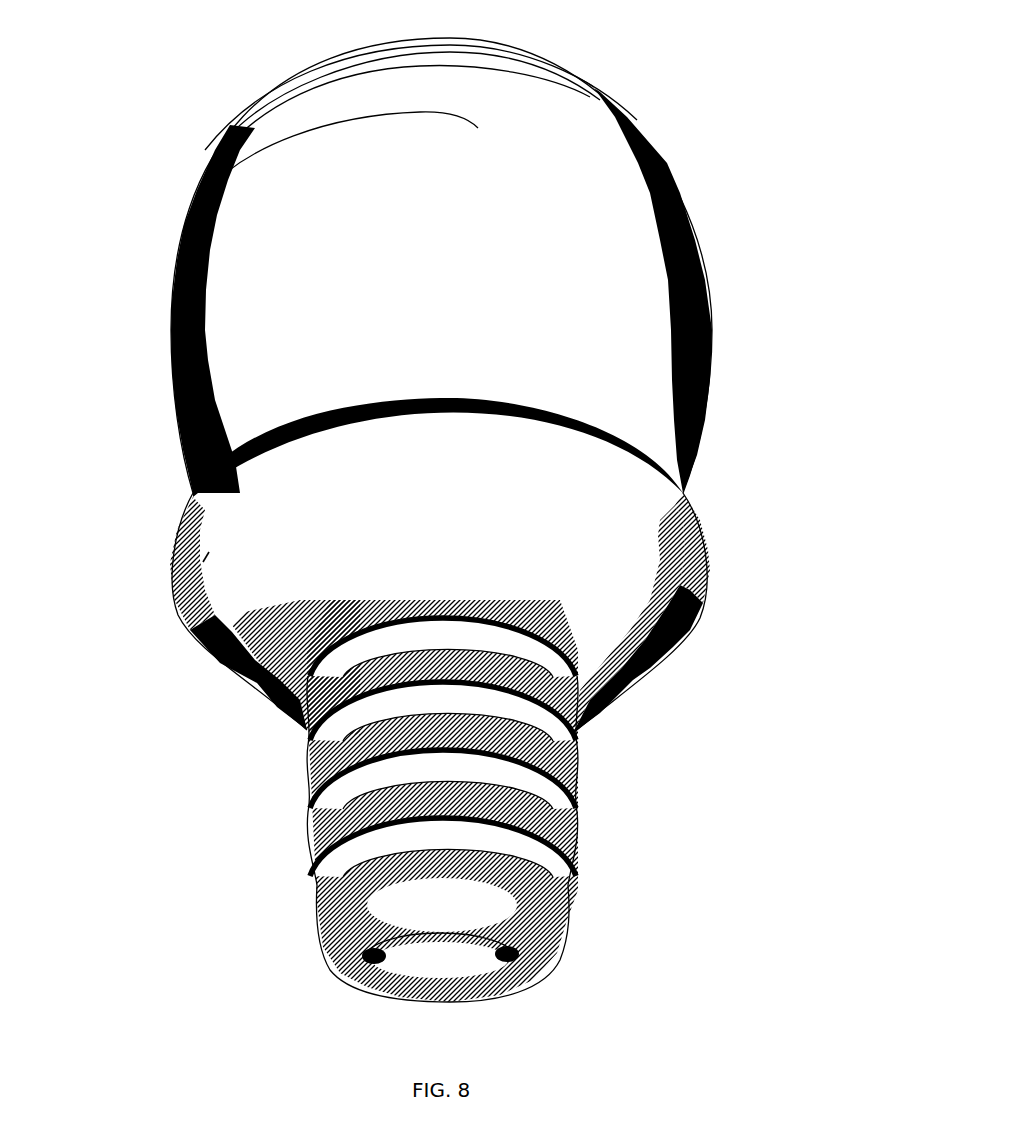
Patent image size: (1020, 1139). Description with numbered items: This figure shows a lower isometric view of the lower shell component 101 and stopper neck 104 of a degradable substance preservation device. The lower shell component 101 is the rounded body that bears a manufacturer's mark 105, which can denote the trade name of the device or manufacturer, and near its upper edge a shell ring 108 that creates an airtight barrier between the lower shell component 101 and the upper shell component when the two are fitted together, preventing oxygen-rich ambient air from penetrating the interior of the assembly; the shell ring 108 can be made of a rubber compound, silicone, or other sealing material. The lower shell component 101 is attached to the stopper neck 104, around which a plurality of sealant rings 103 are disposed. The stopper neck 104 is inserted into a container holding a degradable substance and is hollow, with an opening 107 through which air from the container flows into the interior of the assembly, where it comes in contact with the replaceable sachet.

The lower shell component 101 is at (715, 310).
The sealant rings 103 is at (308, 819).
The stopper neck 104 is at (560, 940).
The manufacturer's mark 105 is at (186, 209).
The opening 107 is at (424, 950).
The shell ring 108 is at (565, 80).